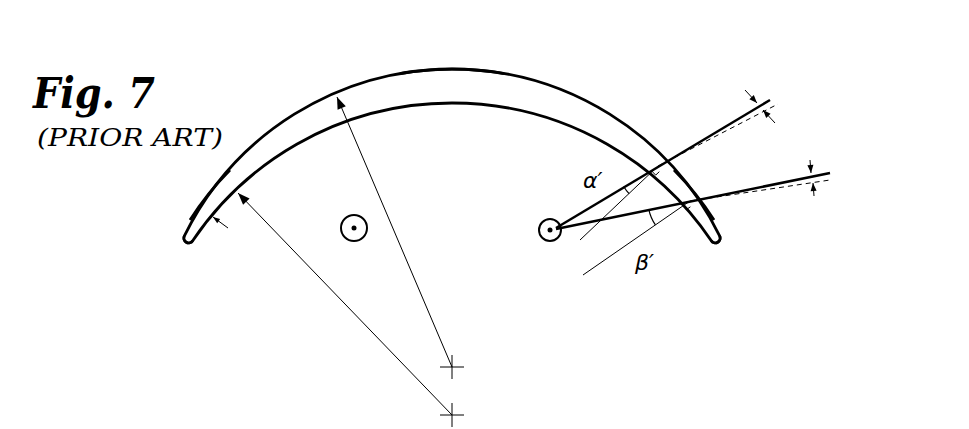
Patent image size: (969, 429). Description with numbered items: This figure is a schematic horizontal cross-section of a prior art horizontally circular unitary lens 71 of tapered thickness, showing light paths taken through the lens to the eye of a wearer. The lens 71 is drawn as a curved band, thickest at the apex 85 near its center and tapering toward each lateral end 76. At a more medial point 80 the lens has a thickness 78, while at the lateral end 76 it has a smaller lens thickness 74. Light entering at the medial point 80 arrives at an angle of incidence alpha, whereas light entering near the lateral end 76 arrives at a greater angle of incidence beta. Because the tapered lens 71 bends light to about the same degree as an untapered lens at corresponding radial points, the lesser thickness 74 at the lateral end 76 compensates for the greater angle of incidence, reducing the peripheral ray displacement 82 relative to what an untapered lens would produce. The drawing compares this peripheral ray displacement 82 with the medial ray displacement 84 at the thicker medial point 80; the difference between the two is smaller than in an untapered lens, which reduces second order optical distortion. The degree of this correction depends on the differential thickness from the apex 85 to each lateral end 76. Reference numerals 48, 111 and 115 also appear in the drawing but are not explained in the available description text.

The airfoil blade 48 is at (466, 0).
The cylindrical lens of tapered thickness 71 is at (632, 44).
The lens thickness at lateral end 74 is at (197, 206).
The lateral end 76 is at (162, 222).
The lens thickness at medial point 78 is at (645, 155).
The medial point 80 is at (656, 148).
The peripheral ray displacement 82 is at (835, 173).
The medial ray displacement 84 is at (770, 100).
The apex 85 is at (482, 70).
The axis 111 is at (660, 428).
The axis 115 is at (330, 426).